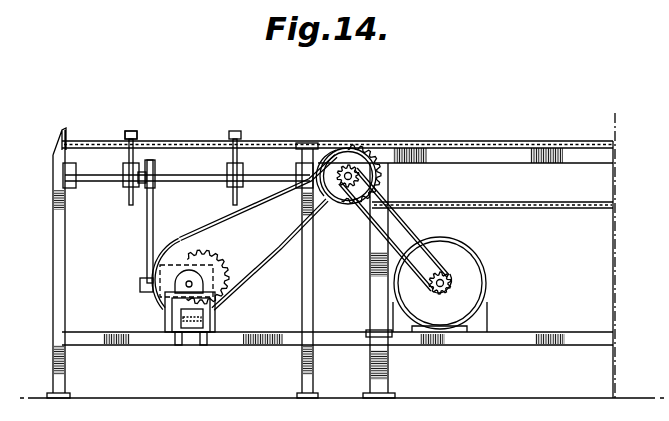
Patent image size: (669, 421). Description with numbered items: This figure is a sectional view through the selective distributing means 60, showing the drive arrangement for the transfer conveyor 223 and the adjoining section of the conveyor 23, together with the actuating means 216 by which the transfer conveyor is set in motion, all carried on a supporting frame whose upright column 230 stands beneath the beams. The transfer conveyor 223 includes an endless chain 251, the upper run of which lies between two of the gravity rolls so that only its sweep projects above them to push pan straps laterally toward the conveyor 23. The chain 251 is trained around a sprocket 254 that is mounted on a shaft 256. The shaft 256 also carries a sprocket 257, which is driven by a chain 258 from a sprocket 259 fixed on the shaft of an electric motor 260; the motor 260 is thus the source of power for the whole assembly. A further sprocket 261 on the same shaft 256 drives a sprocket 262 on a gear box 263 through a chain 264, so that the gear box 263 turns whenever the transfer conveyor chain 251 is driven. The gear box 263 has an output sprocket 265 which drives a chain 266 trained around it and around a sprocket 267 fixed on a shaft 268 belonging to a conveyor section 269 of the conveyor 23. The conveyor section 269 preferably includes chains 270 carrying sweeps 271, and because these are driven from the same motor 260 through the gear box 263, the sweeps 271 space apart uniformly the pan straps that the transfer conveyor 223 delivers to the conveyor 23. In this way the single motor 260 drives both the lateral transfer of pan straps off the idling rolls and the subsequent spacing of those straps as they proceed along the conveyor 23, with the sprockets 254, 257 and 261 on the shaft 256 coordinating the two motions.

The conveyor 23 is at (185, 128).
The selective distributing means 60 is at (439, 127).
The actuating means 216 is at (500, 299).
The transfer conveyor 223 is at (603, 211).
The support column 230 is at (362, 355).
The endless chain 251 is at (535, 143).
The sprocket 254 is at (353, 152).
The shaft 256 is at (341, 151).
The sprocket 257 is at (372, 168).
The chain 258 is at (419, 239).
The sprocket 259 is at (445, 268).
The electric motor 260 is at (475, 278).
The sprocket 261 is at (335, 204).
The sprocket 262 is at (222, 292).
The gear box 263 is at (207, 258).
The chain 264 is at (288, 262).
The output sprocket 265 is at (142, 281).
The chain 266 is at (147, 243).
The sprocket 267 is at (142, 188).
The shaft 268 is at (160, 178).
The conveyor section 269 is at (138, 126).
The chains 270 is at (240, 155).
The sweeps 271 is at (128, 130).